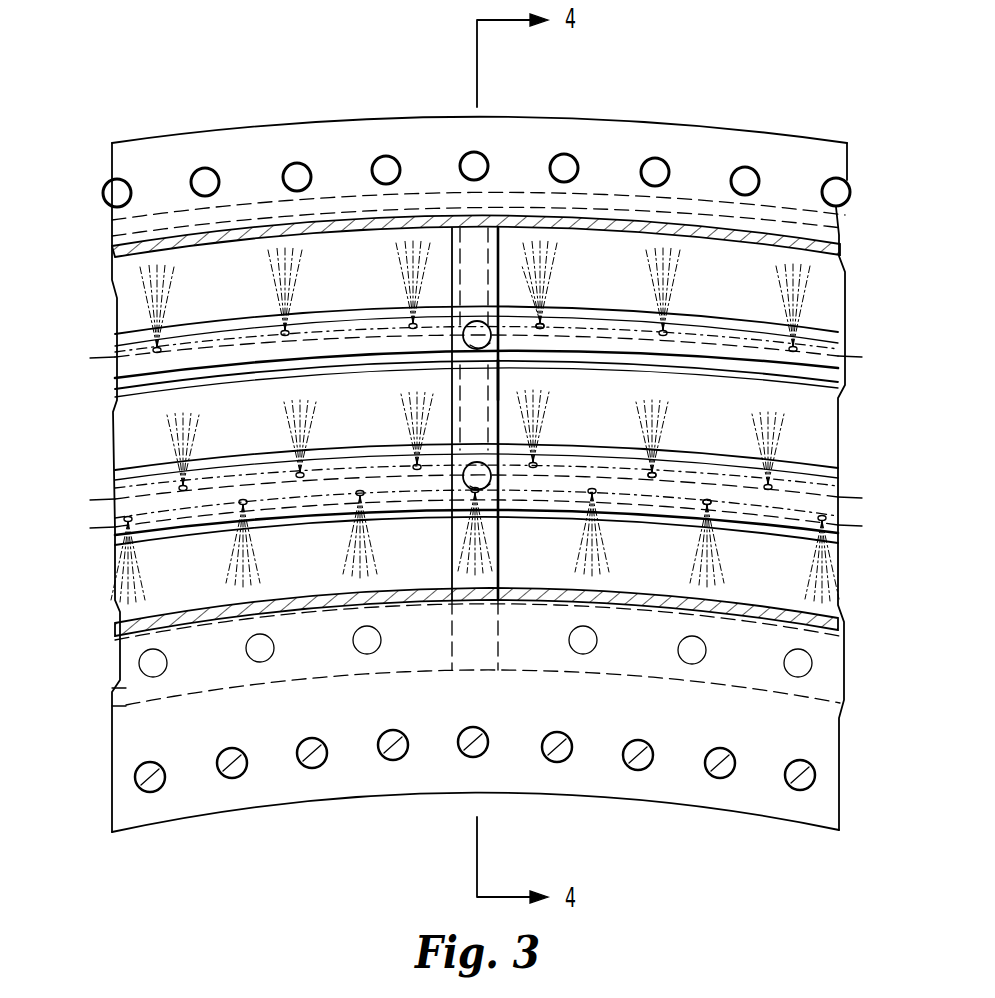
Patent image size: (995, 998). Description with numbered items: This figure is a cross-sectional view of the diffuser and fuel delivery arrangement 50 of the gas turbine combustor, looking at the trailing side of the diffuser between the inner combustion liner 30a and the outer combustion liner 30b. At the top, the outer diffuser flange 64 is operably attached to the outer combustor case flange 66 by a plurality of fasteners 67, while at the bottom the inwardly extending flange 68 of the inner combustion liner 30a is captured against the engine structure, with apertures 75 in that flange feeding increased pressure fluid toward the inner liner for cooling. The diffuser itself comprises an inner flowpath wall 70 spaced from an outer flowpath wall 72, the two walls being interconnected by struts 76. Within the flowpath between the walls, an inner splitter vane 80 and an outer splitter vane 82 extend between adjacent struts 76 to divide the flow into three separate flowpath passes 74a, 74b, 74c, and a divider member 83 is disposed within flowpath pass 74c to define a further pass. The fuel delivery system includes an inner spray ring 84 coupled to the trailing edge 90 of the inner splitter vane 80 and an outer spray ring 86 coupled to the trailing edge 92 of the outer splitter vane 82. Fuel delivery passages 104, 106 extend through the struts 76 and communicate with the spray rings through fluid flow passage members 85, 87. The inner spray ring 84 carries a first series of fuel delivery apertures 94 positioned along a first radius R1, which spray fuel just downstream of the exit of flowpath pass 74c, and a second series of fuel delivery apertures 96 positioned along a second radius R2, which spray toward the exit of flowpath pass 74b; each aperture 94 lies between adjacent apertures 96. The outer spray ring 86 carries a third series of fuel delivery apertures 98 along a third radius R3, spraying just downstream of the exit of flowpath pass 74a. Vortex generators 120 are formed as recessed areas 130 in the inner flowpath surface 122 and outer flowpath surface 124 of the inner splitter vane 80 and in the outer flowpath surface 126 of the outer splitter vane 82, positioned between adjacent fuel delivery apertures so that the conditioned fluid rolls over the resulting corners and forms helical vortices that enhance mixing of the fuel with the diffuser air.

The combustor liner segment 50 is at (778, 91).
The outer diffuser flange 64 is at (637, 117).
The outer combustor case flange 66 is at (112, 236).
The fasteners 67 is at (386, 156).
The inwardly extending flange 68 is at (188, 820).
The inner flowpath wall 70 is at (112, 688).
The outer flowpath wall 72 is at (688, 213).
The flowpath pass 74a is at (244, 281).
The flowpath pass 74b is at (391, 436).
The flowpath pass 74c is at (442, 562).
The apertures 75 is at (813, 670).
The struts 76 is at (447, 382).
The inner splitter vane 80 is at (716, 468).
The outer splitter vane 82 is at (661, 366).
The divider member 83 is at (838, 650).
The inner spray ring 84 is at (190, 506).
The fluid flow passage member 85 is at (490, 482).
The outer spray ring 86 is at (171, 358).
The fluid flow passage member 87 is at (499, 378).
The trailing edge 90 is at (686, 463).
The trailing edge 92 is at (565, 357).
The first series of fuel delivery apertures 94 is at (705, 505).
The second series of fuel delivery apertures 96 is at (652, 474).
The third series of fuel delivery apertures 98 is at (543, 326).
The fuel delivery passage 104 is at (550, 416).
The fuel delivery passage 106 is at (470, 214).
The vortex generators 120 is at (739, 325).
The inner flowpath surface 122 is at (318, 524).
The outer flowpath surface 124 is at (207, 463).
The outer flowpath surface 126 is at (352, 310).
The recessed areas 130 is at (209, 331).
The first radius R1 is at (110, 528).
The second radius R2 is at (110, 498).
The third radius R3 is at (110, 355).
The inner combustion liner 30a is at (812, 621).
The outer combustion liner 30b is at (793, 258).